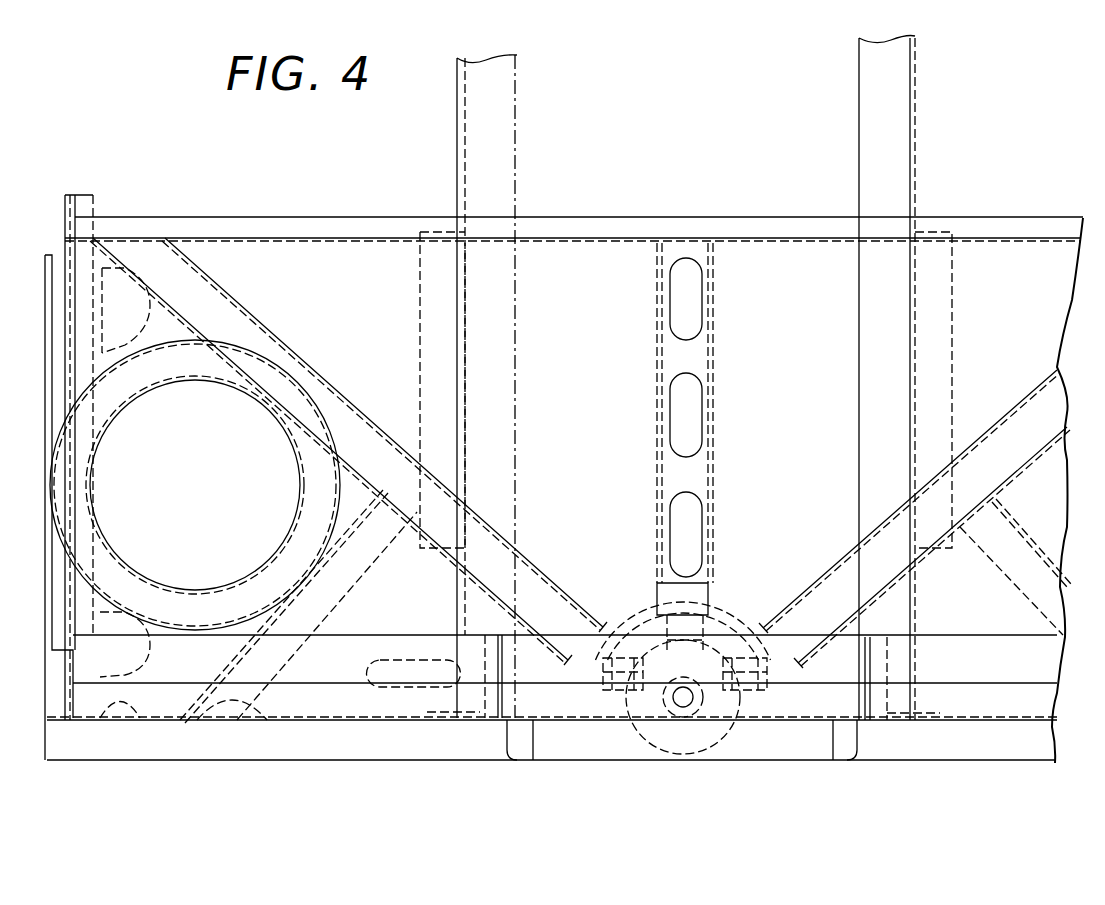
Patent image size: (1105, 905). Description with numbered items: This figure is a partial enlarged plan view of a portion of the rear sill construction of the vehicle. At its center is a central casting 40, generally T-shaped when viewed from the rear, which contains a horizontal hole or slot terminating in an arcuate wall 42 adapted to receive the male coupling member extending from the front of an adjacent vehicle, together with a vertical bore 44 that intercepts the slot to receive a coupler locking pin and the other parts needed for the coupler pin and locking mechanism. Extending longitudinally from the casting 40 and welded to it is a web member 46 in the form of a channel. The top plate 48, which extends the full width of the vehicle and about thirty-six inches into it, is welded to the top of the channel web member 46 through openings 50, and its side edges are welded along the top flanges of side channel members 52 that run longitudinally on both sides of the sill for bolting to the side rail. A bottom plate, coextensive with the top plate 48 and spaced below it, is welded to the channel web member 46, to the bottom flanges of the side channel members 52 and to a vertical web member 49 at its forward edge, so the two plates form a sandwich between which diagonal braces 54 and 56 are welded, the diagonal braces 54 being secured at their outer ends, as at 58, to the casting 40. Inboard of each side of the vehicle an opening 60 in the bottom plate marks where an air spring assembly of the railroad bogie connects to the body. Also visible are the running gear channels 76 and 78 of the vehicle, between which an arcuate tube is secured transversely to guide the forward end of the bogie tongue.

The central casting 40 is at (520, 753).
The arcuate wall 42 is at (731, 626).
The vertical bore 44 is at (689, 708).
The web member 46 is at (712, 525).
The top plate 48 is at (623, 250).
The vertical web member 49 is at (286, 238).
The openings 50 is at (703, 403).
The side channel members 52 is at (86, 196).
The diagonal braces 54 is at (246, 306).
The diagonal braces 56 is at (352, 590).
The securing location 58 is at (606, 628).
The opening 60 is at (298, 505).
The running gear channel 76 is at (858, 272).
The running gear channel 78 is at (515, 406).